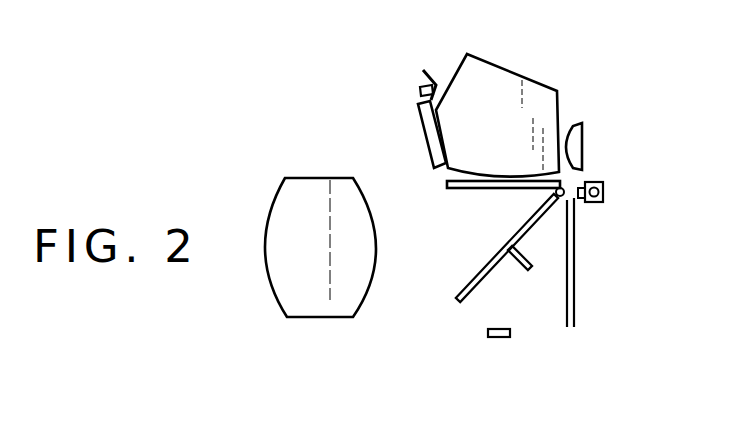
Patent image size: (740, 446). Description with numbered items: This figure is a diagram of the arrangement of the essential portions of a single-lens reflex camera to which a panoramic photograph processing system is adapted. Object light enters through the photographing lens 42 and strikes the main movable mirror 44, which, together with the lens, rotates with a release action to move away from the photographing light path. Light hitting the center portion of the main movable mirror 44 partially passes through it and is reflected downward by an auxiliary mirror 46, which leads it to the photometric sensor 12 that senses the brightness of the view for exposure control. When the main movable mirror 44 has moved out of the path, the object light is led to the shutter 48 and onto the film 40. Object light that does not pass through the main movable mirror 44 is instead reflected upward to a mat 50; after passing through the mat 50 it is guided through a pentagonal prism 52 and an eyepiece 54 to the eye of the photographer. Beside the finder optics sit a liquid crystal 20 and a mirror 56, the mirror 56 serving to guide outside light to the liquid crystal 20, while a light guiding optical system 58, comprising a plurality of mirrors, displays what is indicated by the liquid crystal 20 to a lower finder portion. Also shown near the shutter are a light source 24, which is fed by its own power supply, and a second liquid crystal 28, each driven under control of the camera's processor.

The photometric sensor 12 is at (498, 338).
The liquid crystal 20 is at (420, 90).
The light source 24 is at (605, 192).
The liquid crystal 28 is at (580, 203).
The film 40 is at (576, 306).
The photographing lens 42 is at (322, 318).
The main movable mirror 44 is at (459, 303).
The auxiliary mirror 46 is at (520, 271).
The shutter 48 is at (563, 300).
The mat 50 is at (480, 190).
The pentagonal prism 52 is at (512, 72).
The eyepiece 54 is at (583, 127).
The mirror 56 is at (427, 72).
The light guiding optical system 58 is at (425, 136).